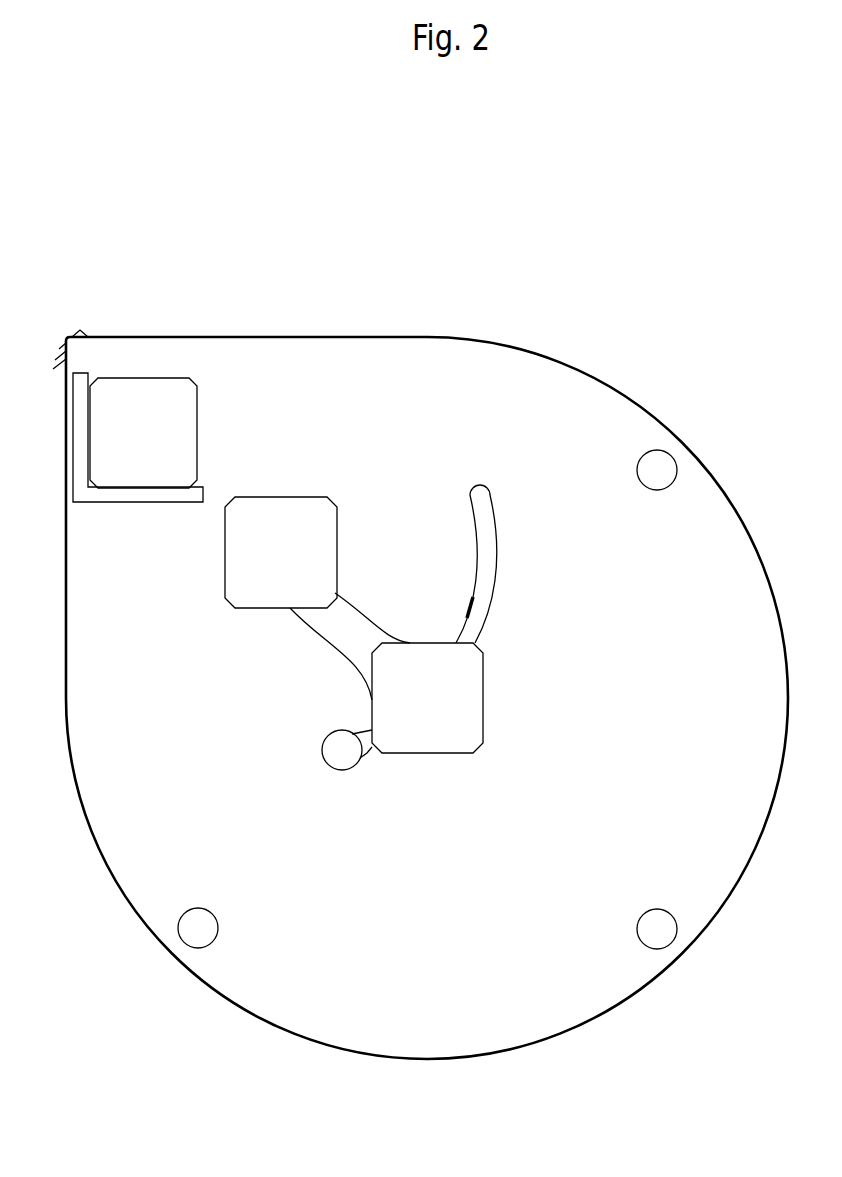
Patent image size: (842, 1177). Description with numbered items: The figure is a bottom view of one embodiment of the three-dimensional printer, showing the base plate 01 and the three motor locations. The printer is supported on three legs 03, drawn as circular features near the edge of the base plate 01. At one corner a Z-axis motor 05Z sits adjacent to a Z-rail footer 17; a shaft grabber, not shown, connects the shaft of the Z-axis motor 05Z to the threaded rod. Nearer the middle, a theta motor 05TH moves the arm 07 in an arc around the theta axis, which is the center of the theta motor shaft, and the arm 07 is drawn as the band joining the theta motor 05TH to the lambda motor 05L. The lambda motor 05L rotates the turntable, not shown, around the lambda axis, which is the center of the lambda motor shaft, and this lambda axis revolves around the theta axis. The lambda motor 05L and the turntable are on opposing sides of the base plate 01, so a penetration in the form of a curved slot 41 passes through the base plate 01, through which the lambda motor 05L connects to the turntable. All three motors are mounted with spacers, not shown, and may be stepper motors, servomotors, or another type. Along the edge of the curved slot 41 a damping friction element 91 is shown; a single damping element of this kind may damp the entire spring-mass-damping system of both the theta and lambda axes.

The base plate 01 is at (465, 993).
The legs 03 is at (663, 465).
The Z-rail footer 17 is at (103, 498).
The Z-axis motor 05Z is at (155, 413).
The theta motor 05TH is at (255, 578).
The arm 07 is at (345, 643).
The lambda motor 05L is at (433, 738).
The curved slot 41 is at (483, 588).
The damping friction element 91 is at (470, 605).